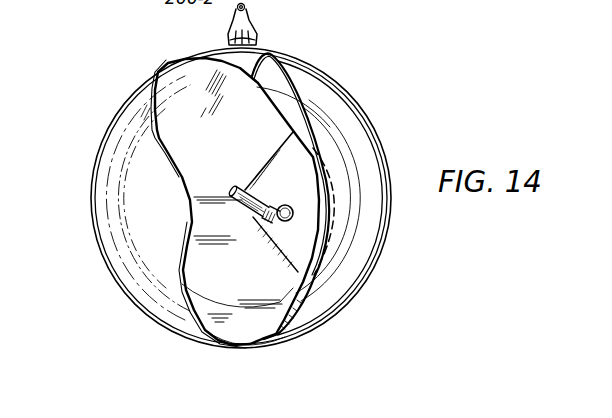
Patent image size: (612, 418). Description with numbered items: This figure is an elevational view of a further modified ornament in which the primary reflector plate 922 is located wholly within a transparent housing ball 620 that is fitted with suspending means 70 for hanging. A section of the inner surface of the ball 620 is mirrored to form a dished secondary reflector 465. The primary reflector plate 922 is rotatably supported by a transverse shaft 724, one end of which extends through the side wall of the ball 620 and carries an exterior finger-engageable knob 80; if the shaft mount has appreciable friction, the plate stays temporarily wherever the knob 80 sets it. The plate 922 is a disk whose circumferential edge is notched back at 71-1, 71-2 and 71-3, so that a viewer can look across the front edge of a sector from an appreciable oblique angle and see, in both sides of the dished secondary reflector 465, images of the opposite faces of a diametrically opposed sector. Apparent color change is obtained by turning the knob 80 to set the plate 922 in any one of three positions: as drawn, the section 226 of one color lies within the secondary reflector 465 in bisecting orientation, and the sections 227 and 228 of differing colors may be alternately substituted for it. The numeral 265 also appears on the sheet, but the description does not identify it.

The housing ball 620 is at (358, 92).
The suspending means 70 is at (258, 24).
The primary reflector plate 922 is at (157, 128).
The notched back edge section 71-1 is at (222, 190).
The notched back edge section 71-2 is at (272, 148).
The notched back edge section 71-3 is at (313, 313).
The transverse shaft 724 is at (223, 217).
The dished secondary reflector 465 is at (253, 349).
The finger-engageable knob 80 is at (285, 214).
The section of one color 226 is at (302, 193).
The section of differing color 228 is at (236, 164).
The section of differing color 227 is at (248, 279).
The label 265 is at (121, 6).